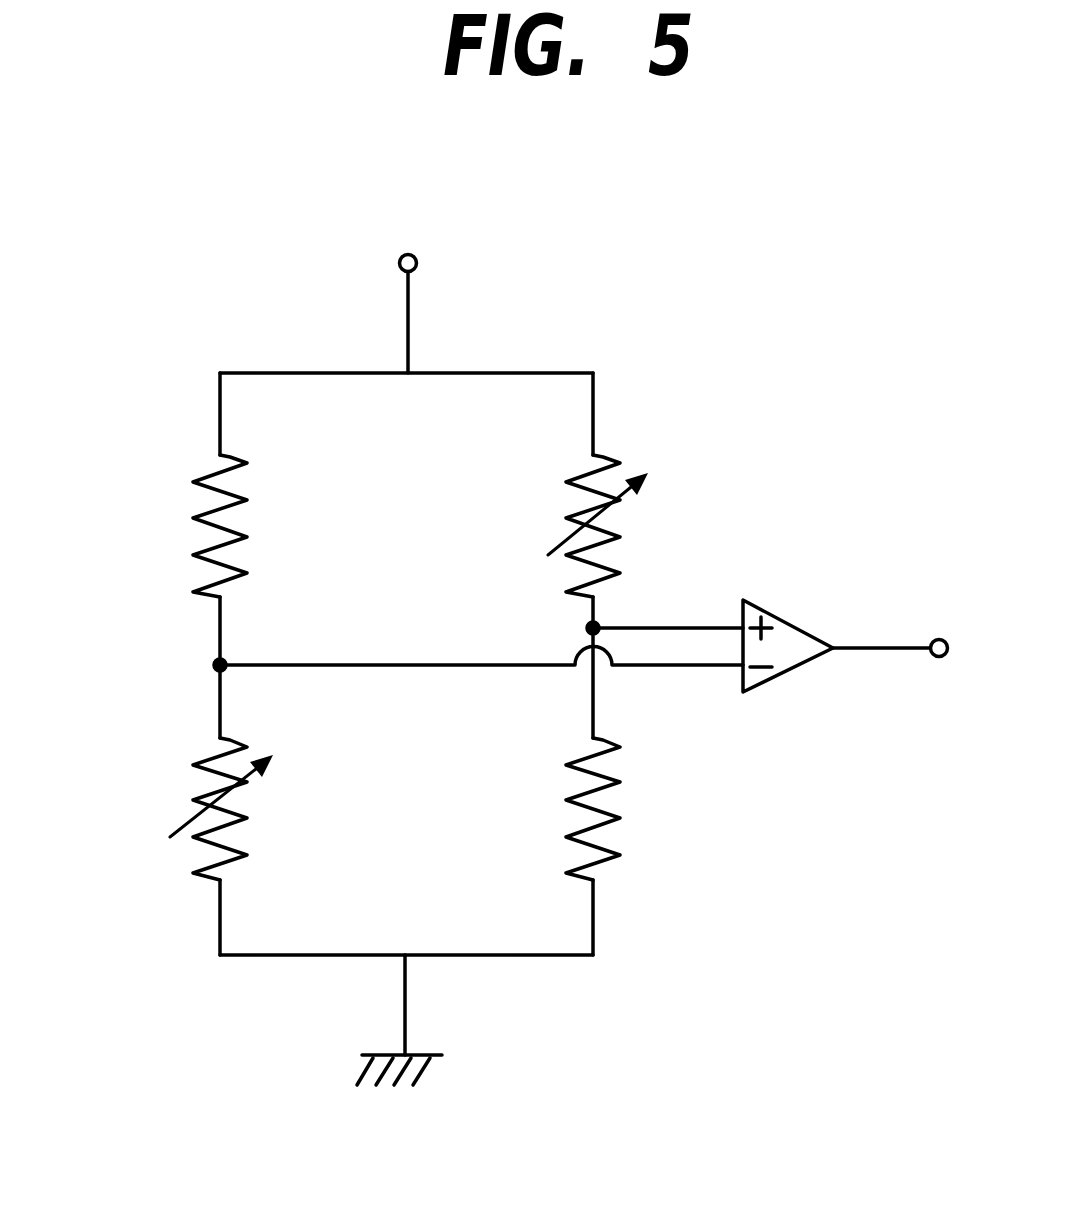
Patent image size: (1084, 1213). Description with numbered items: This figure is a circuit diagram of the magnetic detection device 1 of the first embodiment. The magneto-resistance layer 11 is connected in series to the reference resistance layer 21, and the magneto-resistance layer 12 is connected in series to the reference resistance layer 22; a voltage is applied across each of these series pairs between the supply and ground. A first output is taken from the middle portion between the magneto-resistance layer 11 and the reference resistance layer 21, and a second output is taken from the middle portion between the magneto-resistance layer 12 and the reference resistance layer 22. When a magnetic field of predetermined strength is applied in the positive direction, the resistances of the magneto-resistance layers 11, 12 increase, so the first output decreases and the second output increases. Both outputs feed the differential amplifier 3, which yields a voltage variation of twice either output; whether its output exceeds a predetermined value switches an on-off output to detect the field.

The magnetic detection device 1 is at (578, 290).
The magneto-resistance layer 11 is at (630, 518).
The magneto-resistance layer 12 is at (178, 855).
The reference resistance layer 21 is at (627, 810).
The reference resistance layer 22 is at (200, 500).
The differential amplifier 3 is at (800, 638).